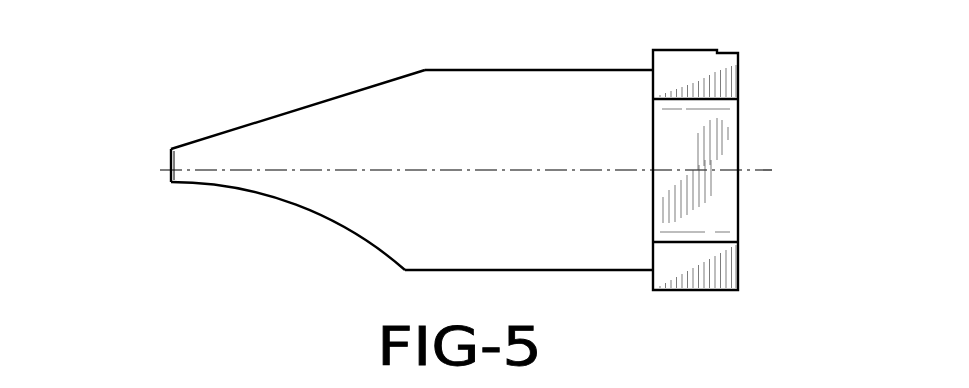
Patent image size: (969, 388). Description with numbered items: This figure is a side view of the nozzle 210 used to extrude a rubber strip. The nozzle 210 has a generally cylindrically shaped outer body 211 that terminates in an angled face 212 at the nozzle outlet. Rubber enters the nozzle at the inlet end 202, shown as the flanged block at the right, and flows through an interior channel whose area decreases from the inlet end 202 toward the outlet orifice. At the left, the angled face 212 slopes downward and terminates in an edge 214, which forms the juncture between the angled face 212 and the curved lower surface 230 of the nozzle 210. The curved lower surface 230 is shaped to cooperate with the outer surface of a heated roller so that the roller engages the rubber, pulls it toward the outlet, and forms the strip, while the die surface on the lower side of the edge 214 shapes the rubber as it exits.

The nozzle 210 is at (220, 95).
The outer body 211 is at (503, 124).
The angled face 212 is at (330, 97).
The edge 214 is at (170, 152).
The curved lower surface 230 is at (330, 217).
The inlet end 202 is at (738, 137).